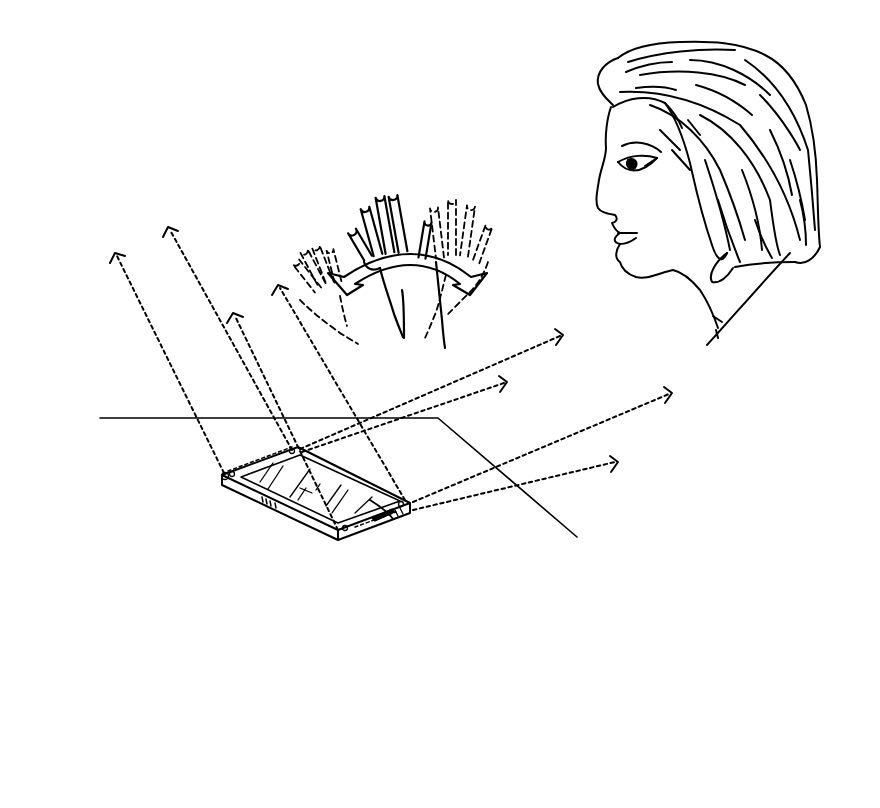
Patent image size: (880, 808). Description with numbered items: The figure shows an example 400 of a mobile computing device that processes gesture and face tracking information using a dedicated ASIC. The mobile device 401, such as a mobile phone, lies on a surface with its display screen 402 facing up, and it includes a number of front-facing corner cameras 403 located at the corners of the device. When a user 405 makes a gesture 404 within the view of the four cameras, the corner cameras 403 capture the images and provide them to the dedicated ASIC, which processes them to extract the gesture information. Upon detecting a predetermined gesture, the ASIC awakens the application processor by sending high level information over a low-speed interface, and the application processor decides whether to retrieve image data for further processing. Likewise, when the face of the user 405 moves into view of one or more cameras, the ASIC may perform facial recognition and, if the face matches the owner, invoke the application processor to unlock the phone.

The example of the mobile computing device 400 is at (74, 112).
The electronic device 401 is at (291, 523).
The display screen 402 is at (387, 520).
The front-facing corner cameras 403 is at (226, 482).
The gesture 404 is at (314, 197).
The user 405 is at (560, 98).